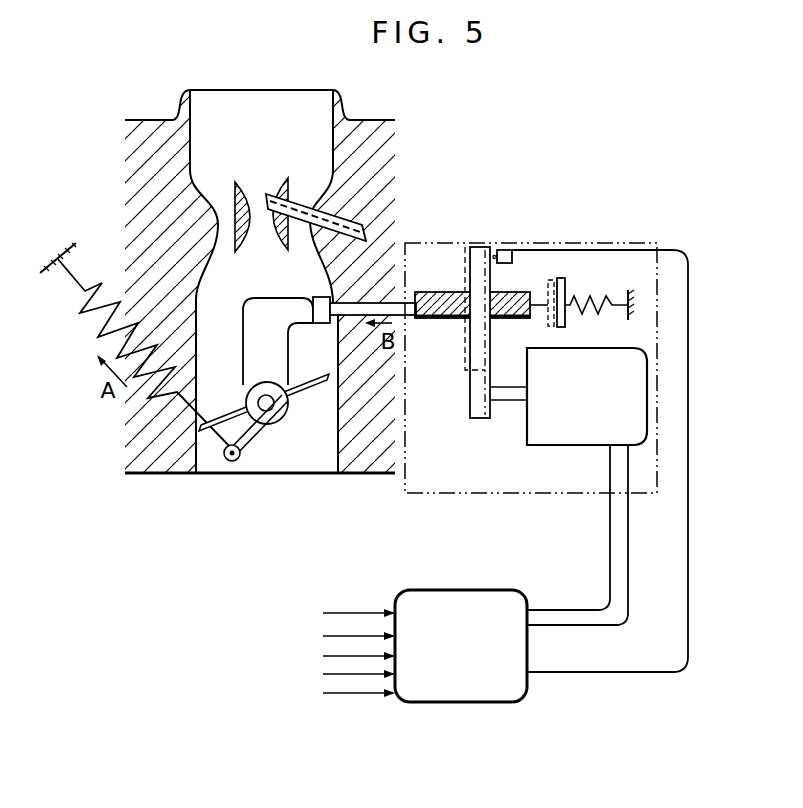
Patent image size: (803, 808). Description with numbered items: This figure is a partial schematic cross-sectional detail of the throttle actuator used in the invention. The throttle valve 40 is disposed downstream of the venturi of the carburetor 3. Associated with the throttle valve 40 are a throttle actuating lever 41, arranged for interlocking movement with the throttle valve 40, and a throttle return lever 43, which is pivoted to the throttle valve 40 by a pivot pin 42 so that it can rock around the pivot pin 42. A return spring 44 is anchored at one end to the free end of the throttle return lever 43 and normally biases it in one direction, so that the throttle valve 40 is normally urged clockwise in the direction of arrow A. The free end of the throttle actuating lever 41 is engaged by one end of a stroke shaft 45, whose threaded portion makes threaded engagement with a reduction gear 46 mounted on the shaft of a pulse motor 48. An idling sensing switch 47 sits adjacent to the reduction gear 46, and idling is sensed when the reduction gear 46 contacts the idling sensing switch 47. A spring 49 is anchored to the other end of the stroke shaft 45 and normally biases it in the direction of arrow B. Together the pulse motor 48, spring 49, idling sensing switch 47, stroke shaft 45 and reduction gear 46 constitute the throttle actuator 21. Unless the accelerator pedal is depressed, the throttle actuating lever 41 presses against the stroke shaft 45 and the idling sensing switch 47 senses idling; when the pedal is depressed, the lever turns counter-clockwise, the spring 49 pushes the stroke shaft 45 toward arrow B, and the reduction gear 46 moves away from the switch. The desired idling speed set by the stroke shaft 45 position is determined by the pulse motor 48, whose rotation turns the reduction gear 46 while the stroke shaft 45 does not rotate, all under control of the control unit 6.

The carburetor 3 is at (362, 118).
The return spring 44 is at (80, 310).
The throttle actuating lever 41 is at (246, 378).
The throttle valve 40 is at (307, 389).
The pivot pin 42 is at (271, 408).
The throttle return lever 43 is at (253, 440).
The stroke shaft 45 is at (410, 320).
The reduction gear 46 is at (471, 246).
The idling sensing switch 47 is at (505, 250).
The spring 49 is at (602, 303).
The pulse motor 48 is at (527, 438).
The throttle actuator 21 is at (455, 498).
The control unit 6 is at (491, 590).